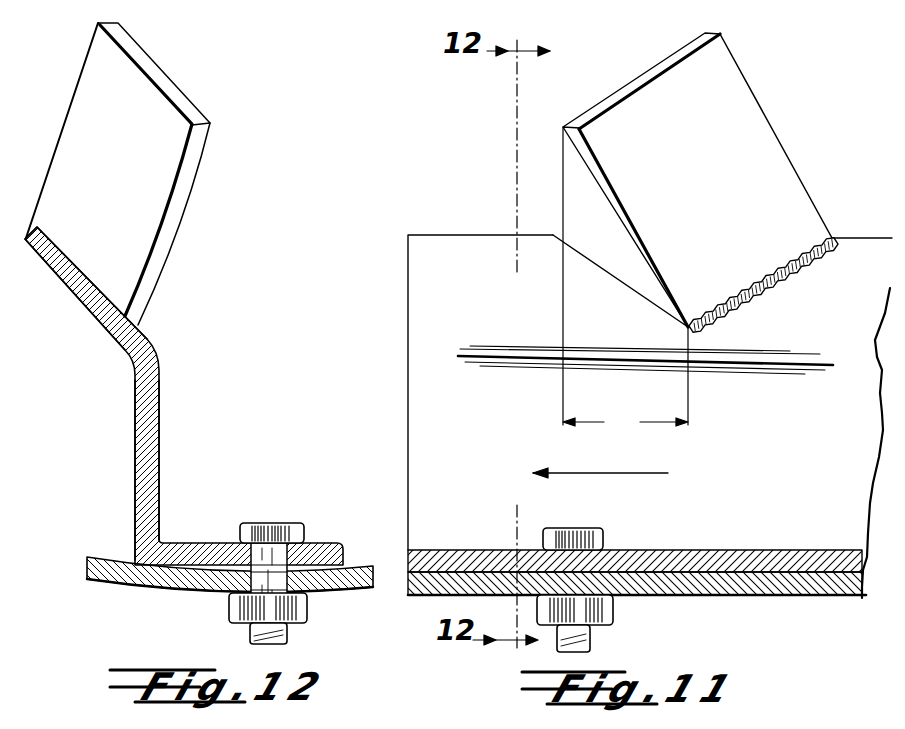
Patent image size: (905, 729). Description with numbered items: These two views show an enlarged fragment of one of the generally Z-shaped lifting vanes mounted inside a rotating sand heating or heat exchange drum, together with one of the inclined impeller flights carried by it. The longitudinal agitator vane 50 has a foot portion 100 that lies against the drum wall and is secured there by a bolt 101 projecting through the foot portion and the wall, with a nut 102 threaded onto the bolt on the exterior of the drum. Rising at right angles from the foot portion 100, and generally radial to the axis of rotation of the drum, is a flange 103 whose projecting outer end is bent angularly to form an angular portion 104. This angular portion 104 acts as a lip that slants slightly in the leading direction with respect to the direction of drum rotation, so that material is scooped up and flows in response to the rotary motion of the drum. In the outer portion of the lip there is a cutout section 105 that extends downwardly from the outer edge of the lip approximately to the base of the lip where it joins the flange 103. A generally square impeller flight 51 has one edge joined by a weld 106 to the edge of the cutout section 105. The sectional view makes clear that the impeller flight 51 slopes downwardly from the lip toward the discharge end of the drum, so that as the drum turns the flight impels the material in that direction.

In FIG. 12, the longitudinal agitator vane 50 is at (153, 440).
In FIG. 11, the longitudinal agitator vane 50 is at (645, 412).
In FIG. 12, the impeller flight 51 is at (170, 172).
In FIG. 11, the impeller flight 51 is at (785, 192).
In FIG. 12, the foot portion 100 is at (193, 543).
In FIG. 11, the foot portion 100 is at (742, 566).
In FIG. 12, the bolt 101 is at (272, 532).
In FIG. 11, the bolt 101 is at (600, 532).
In FIG. 12, the nut 102 is at (295, 605).
In FIG. 11, the nut 102 is at (614, 617).
In FIG. 12, the flange 103 is at (160, 480).
In FIG. 11, the flange 103 is at (650, 416).
In FIG. 12, the angular portion 104 is at (97, 298).
In FIG. 11, the angular portion 104 is at (409, 244).
In FIG. 11, the cutout section 105 is at (612, 278).
In FIG. 11, the weld 106 is at (756, 303).